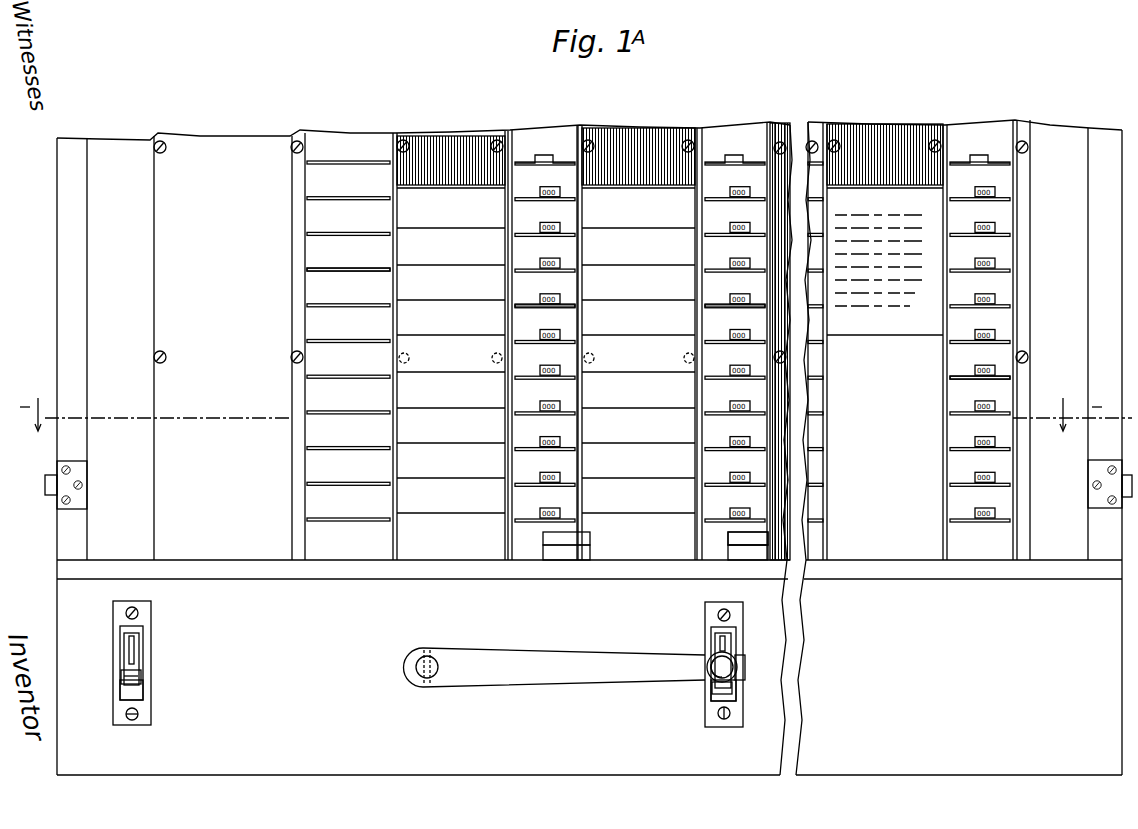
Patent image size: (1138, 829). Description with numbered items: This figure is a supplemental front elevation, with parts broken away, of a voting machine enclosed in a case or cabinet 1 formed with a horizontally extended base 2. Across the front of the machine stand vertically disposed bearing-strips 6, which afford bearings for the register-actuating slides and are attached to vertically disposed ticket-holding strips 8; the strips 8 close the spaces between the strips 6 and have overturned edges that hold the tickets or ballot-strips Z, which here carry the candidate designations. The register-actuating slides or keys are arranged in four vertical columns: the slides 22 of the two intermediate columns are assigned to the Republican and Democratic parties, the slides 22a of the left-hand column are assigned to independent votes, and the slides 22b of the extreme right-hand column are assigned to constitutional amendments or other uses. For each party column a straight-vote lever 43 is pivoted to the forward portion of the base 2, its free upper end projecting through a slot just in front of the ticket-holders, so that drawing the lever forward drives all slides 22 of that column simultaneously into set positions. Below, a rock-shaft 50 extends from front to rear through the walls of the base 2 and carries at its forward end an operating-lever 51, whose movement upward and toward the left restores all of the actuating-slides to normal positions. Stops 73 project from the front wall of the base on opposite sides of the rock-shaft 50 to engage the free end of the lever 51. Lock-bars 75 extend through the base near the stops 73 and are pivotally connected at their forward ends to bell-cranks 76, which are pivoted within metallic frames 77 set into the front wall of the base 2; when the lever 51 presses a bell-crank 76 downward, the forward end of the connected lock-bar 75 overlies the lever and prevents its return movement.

The case or cabinet 1 is at (60, 325).
The base 2 is at (62, 620).
The vertical bearing plates or strips 6 is at (540, 145).
The ticket-holding strips 8 is at (455, 143).
The register-actuating slides or keys 22 is at (712, 345).
The register-actuating slides of the left-hand column 22a is at (313, 273).
The register-actuating slides of the extreme right-hand column 22b is at (955, 378).
The straight-vote lever 43 is at (727, 540).
The rock-shaft 50 is at (420, 672).
The operating-lever 51 is at (592, 676).
The stops 73 is at (118, 694).
The lock-bars 75 is at (133, 650).
The bell-cranks 76 is at (118, 683).
The metallic frames 77 is at (147, 617).
The tickets or ballot-strips Z is at (458, 548).